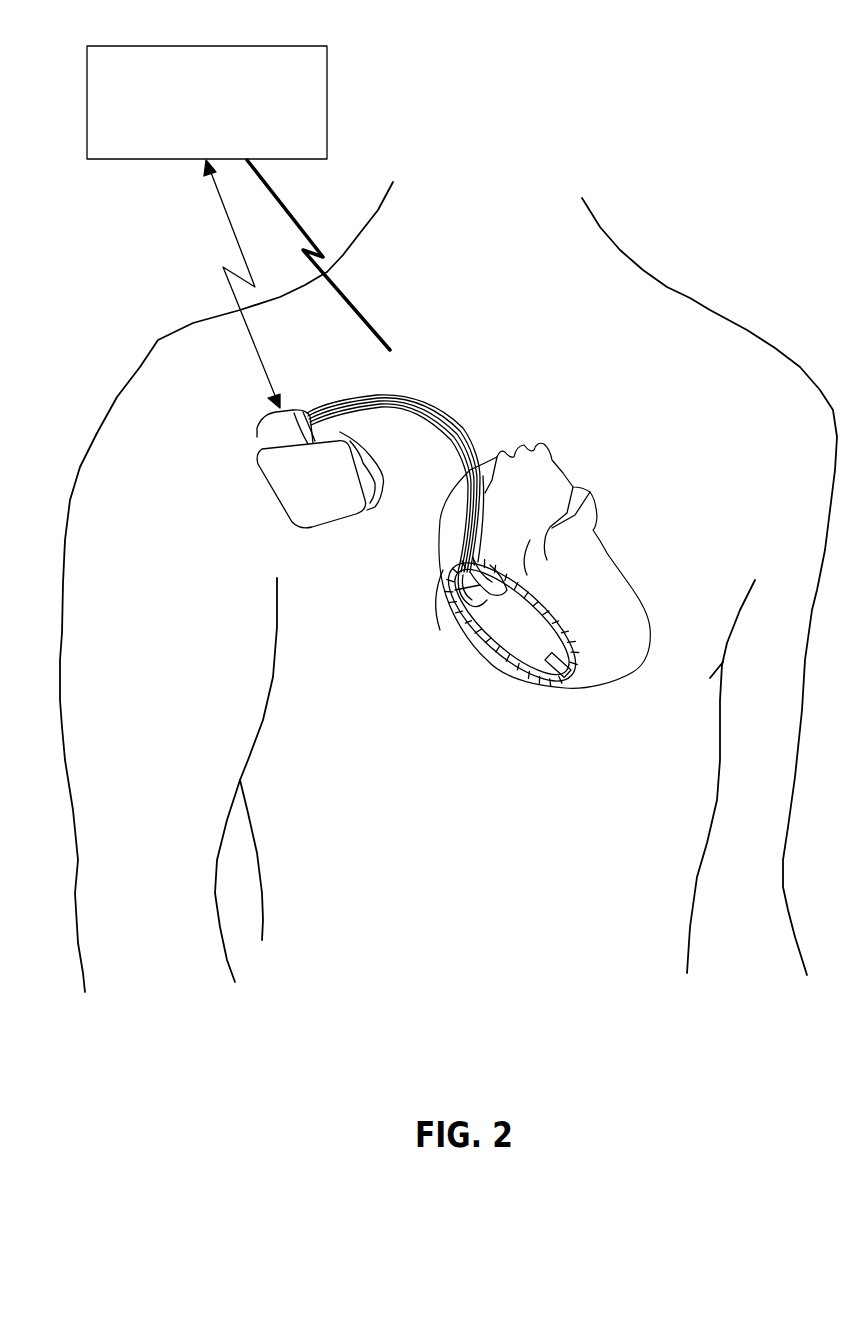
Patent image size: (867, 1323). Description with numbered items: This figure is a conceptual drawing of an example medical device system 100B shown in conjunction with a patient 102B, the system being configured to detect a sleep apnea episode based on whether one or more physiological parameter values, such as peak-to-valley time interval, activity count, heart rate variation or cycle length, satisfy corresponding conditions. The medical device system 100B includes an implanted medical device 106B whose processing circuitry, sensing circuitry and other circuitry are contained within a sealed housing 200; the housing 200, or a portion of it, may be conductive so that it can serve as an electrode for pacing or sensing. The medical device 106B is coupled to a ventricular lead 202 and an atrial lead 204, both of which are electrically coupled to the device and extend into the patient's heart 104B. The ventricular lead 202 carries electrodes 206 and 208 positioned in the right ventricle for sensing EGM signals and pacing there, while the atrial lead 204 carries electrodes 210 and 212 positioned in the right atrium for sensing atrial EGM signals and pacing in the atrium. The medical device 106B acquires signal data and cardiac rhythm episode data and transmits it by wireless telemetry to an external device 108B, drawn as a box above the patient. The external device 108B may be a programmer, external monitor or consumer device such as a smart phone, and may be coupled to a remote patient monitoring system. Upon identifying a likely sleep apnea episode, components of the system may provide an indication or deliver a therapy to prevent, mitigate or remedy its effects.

The medical device system 100B is at (655, 79).
The patient 102B is at (690, 297).
The heart 104B is at (597, 694).
The medical device 106B is at (271, 494).
The external device 108B is at (238, 227).
The housing 200 is at (341, 513).
The ventricular lead 202 is at (437, 407).
The atrial lead 204 is at (463, 438).
The electrode 206 is at (563, 677).
The electrode 208 is at (547, 657).
The electrode 210 is at (513, 540).
The electrode 212 is at (503, 517).